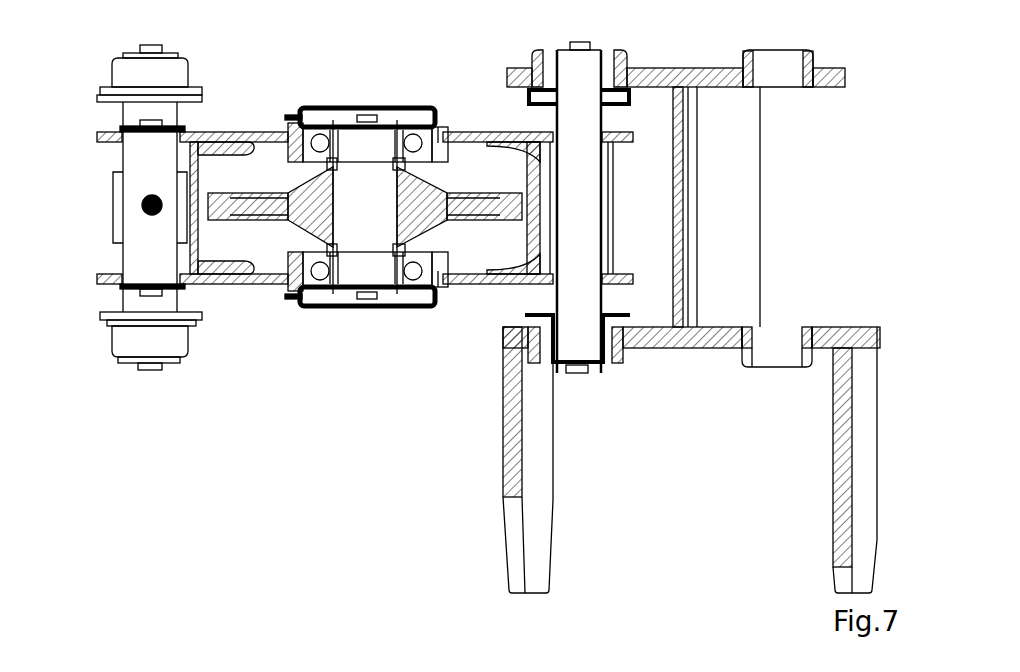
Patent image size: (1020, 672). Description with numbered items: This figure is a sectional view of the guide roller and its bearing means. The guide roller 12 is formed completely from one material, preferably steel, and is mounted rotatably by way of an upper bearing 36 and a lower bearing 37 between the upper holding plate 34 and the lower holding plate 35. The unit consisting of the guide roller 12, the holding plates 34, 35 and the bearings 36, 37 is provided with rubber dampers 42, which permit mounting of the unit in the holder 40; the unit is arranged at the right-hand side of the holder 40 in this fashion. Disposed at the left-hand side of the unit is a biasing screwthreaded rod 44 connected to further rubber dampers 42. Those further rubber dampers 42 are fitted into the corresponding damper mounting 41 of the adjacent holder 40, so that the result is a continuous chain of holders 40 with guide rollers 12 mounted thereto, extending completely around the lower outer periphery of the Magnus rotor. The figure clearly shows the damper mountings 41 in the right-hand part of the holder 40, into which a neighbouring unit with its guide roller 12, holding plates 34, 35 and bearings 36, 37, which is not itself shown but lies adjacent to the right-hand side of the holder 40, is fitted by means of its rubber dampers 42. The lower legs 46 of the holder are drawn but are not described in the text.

The guide roller 12 is at (218, 200).
The upper holding plate 34 is at (487, 137).
The lower holding plate 35 is at (477, 284).
The upper bearing 36 is at (320, 143).
The lower bearing 37 is at (320, 292).
The holder 40 is at (766, 204).
The damper mounting 41 is at (772, 73).
The rubber damper 42 is at (174, 67).
The biasing screwthreaded rod 44 is at (145, 212).
The support leg 46 is at (537, 503).